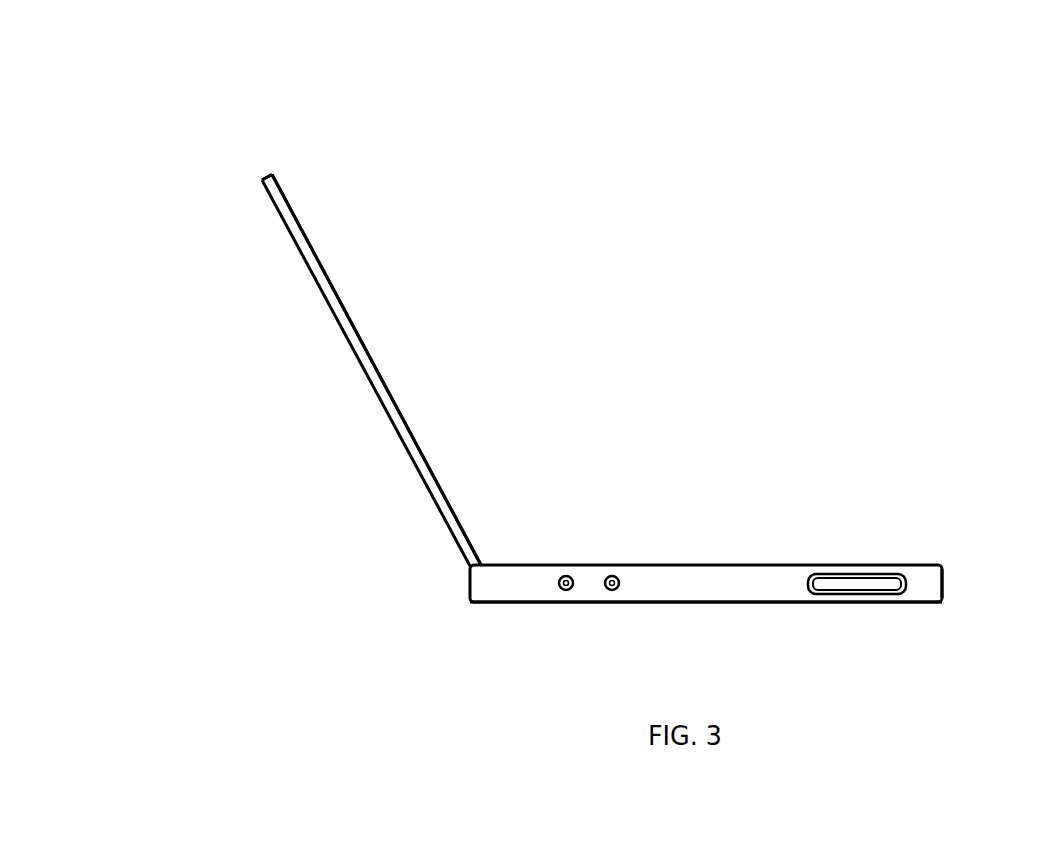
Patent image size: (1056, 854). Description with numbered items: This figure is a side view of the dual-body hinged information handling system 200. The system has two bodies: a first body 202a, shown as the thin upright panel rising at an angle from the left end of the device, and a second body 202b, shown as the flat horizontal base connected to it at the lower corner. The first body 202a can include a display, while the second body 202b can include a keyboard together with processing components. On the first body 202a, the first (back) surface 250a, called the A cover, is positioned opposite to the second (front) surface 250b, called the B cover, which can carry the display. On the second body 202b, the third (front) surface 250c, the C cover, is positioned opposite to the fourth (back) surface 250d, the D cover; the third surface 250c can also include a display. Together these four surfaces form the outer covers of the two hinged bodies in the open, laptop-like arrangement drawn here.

The dual-body hinged information handling system 200 is at (618, 339).
The first body 202a is at (274, 160).
The second body 202b is at (940, 551).
The first (back) surface 250a is at (333, 343).
The second (front) surface 250b is at (318, 236).
The third (front) surface 250c is at (725, 553).
The fourth (back) surface 250d is at (750, 610).